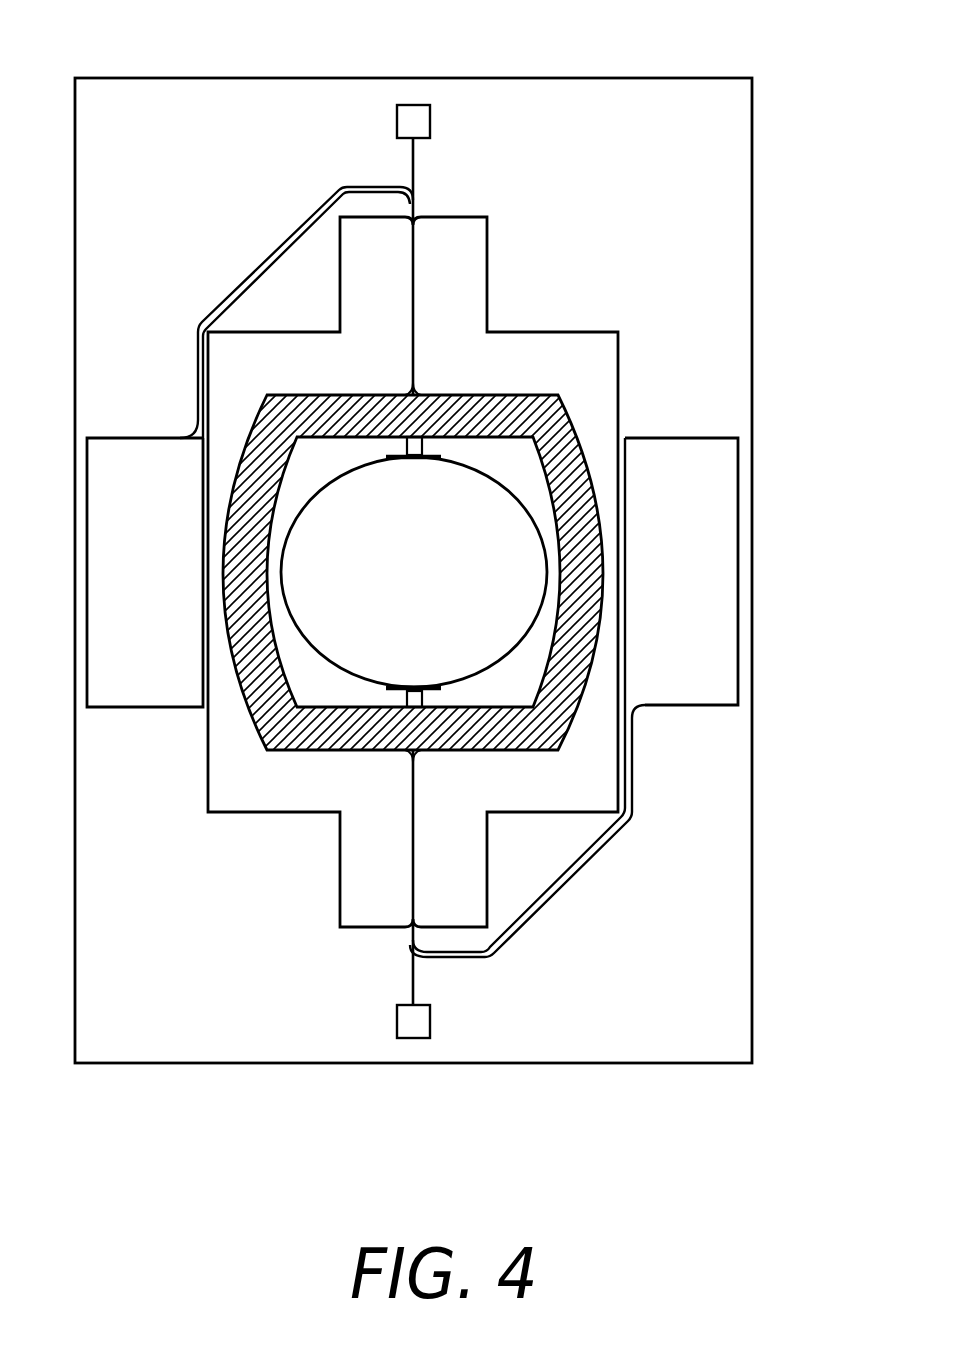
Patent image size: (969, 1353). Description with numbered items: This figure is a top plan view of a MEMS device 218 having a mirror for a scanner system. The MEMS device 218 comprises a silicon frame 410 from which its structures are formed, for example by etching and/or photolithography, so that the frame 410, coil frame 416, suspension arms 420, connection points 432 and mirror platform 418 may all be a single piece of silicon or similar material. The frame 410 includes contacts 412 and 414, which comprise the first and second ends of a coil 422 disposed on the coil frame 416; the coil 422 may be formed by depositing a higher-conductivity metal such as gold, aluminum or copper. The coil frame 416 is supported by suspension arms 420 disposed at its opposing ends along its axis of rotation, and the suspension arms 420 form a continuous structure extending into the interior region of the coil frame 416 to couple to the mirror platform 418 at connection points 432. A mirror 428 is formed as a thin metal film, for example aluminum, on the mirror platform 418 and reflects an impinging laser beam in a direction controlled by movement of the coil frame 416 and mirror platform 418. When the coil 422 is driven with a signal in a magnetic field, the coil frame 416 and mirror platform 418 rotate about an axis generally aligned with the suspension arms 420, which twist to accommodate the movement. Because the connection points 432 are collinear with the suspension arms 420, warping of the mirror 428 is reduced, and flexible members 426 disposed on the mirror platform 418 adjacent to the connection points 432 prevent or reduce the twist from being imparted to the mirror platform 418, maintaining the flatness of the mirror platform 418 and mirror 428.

The silicon frame 410 is at (137, 78).
The MEMS device 218 is at (458, 533).
The contact 412 is at (133, 447).
The contact 414 is at (683, 447).
The coil frame 416 is at (413, 553).
The mirror platform 418 is at (510, 508).
The suspension arms 420 is at (412, 340).
The coil 422 is at (308, 395).
The flexible members 426 is at (415, 462).
The mirror 428 is at (516, 609).
The connection points 432 is at (422, 448).